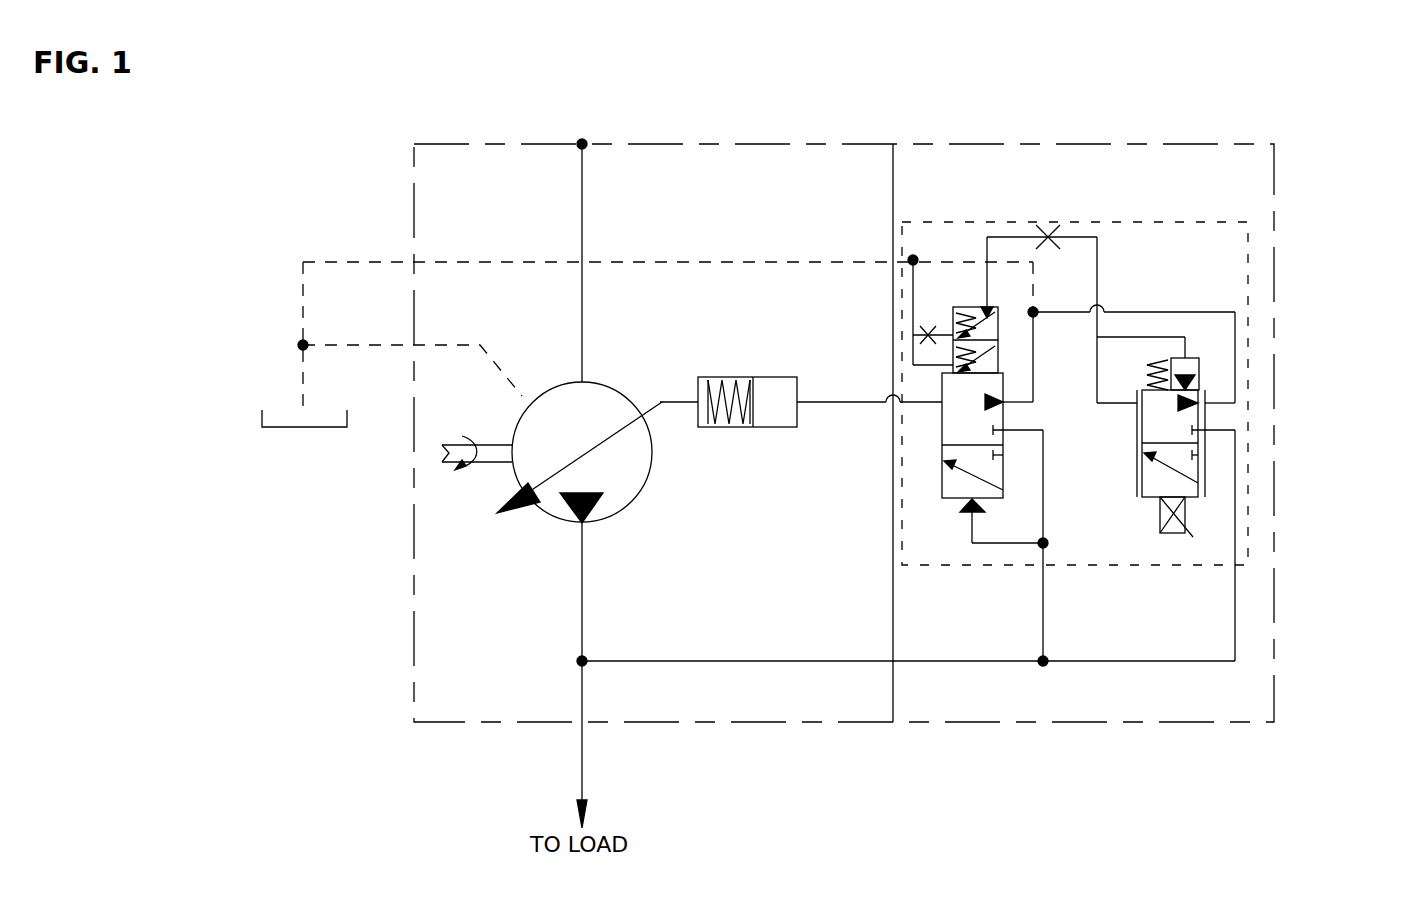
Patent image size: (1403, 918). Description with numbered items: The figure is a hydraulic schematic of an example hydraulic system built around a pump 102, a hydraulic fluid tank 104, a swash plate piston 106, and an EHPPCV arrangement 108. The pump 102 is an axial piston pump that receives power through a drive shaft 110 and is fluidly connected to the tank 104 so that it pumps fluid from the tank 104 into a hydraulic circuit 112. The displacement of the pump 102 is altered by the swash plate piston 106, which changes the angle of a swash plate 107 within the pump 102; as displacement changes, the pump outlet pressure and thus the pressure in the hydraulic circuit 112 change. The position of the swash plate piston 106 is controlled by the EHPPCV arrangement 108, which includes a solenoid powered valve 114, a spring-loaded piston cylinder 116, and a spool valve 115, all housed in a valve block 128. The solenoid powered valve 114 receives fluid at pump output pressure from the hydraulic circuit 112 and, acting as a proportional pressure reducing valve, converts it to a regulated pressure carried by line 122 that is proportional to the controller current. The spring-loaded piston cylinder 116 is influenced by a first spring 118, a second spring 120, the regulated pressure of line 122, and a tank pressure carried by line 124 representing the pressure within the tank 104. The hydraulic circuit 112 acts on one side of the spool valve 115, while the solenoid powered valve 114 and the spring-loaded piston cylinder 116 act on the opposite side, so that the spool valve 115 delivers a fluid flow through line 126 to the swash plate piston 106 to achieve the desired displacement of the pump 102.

The pump 102 is at (557, 520).
The hydraulic fluid tank 104 is at (276, 427).
The swash plate piston 106 is at (765, 377).
The swash plate 107 is at (627, 422).
The EHPPCV arrangement 108 is at (1130, 222).
The drive shaft 110 is at (497, 462).
The hydraulic circuit 112 is at (580, 620).
The solenoid powered valve 114 is at (1232, 411).
The spool valve 115 is at (922, 461).
The spring-loaded piston cylinder 116 is at (950, 292).
The first spring 118 is at (990, 350).
The second spring 120 is at (998, 323).
The regulated pressure line 122 is at (987, 262).
The tank fluid line 124 is at (912, 348).
The swash plate piston fluid line 126 is at (840, 405).
The valve block 128 is at (970, 445).